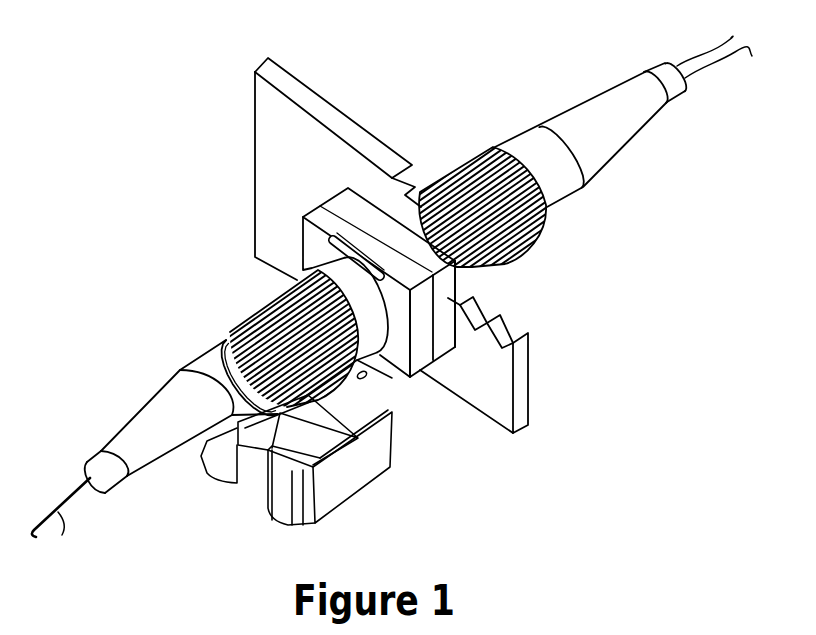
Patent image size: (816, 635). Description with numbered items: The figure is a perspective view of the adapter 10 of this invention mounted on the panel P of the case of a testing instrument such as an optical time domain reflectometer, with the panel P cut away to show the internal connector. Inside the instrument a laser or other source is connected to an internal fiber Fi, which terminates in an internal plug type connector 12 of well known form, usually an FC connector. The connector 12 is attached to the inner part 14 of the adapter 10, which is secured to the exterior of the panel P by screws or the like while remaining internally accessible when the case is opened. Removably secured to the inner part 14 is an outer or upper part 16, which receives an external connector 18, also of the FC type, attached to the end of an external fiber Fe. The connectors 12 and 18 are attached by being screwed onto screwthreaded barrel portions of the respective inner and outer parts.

The adapter 10 is at (363, 211).
The internal plug type connector 12 is at (583, 112).
The inner part 14 is at (437, 327).
The outer part 16 is at (425, 340).
The external connector 18 is at (180, 397).
The panel P is at (528, 378).
The internal fiber Fi is at (728, 57).
The external fiber Fe is at (61, 522).